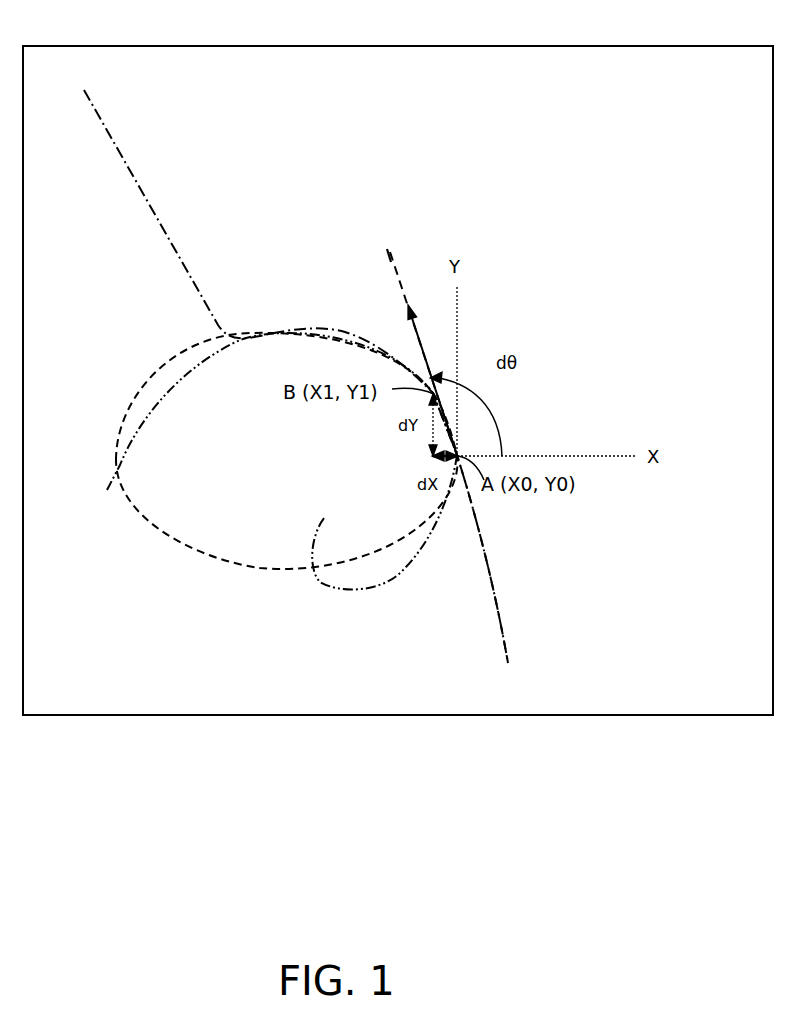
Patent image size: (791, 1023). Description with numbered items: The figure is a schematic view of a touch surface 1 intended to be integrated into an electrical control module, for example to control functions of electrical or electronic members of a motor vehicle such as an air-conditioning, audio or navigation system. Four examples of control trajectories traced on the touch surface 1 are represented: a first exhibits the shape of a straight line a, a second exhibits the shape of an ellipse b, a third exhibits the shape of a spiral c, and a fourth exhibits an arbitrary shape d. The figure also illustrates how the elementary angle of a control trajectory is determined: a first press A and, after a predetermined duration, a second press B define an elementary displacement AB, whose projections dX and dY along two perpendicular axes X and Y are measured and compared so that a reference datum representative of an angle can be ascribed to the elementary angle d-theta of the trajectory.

The touch surface 1 is at (587, 46).
The straight line a is at (388, 258).
The ellipse b is at (175, 362).
The spiral c is at (152, 420).
The arbitrary shape d is at (182, 266).